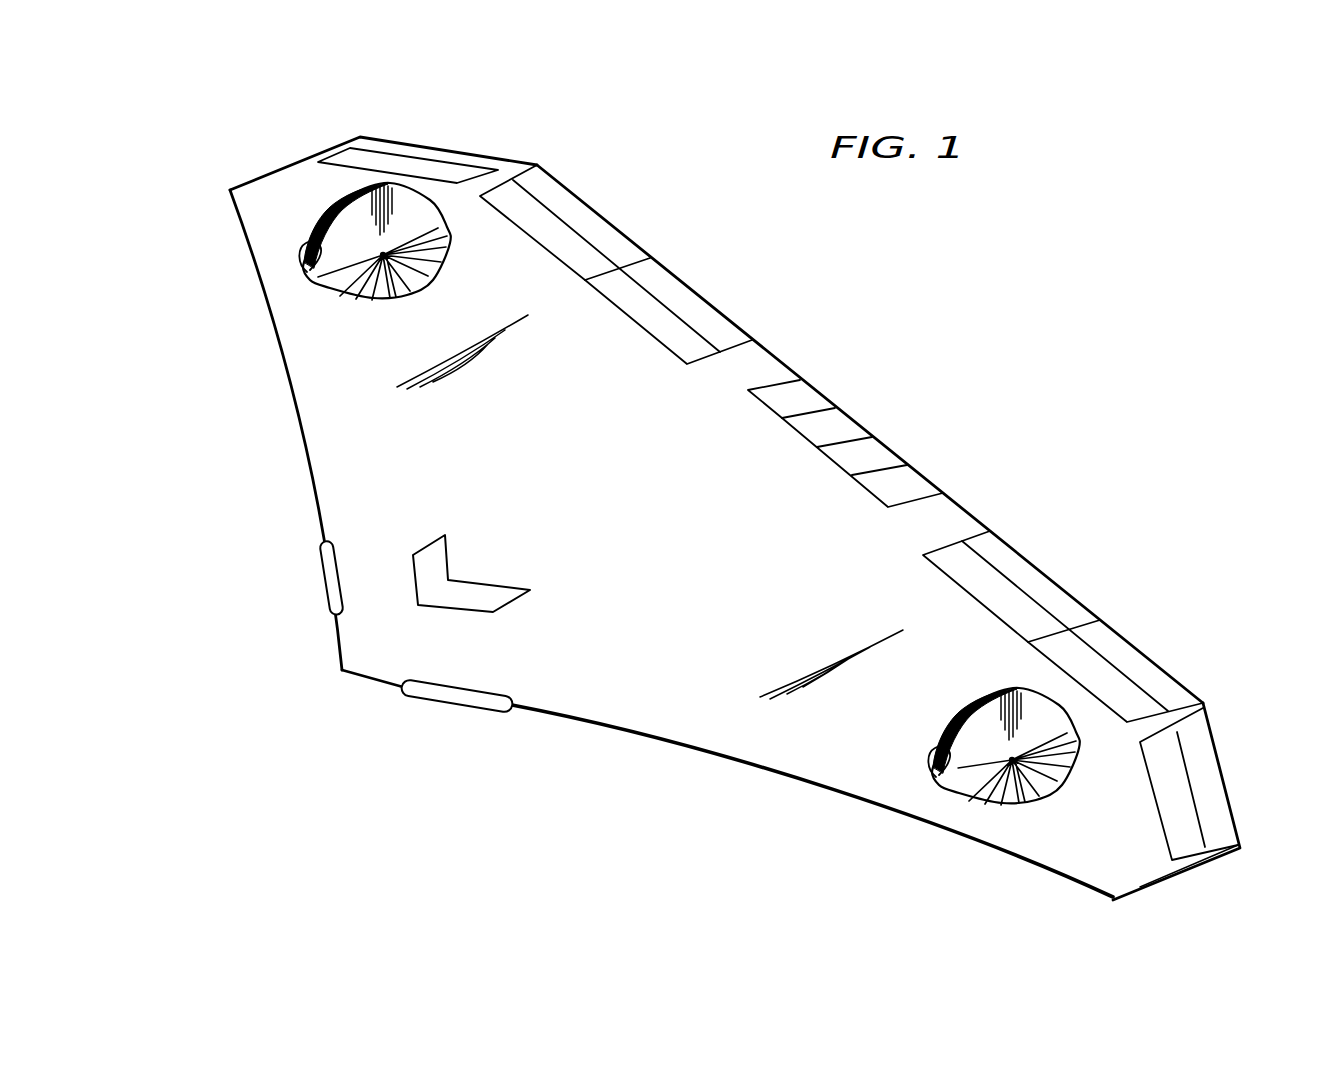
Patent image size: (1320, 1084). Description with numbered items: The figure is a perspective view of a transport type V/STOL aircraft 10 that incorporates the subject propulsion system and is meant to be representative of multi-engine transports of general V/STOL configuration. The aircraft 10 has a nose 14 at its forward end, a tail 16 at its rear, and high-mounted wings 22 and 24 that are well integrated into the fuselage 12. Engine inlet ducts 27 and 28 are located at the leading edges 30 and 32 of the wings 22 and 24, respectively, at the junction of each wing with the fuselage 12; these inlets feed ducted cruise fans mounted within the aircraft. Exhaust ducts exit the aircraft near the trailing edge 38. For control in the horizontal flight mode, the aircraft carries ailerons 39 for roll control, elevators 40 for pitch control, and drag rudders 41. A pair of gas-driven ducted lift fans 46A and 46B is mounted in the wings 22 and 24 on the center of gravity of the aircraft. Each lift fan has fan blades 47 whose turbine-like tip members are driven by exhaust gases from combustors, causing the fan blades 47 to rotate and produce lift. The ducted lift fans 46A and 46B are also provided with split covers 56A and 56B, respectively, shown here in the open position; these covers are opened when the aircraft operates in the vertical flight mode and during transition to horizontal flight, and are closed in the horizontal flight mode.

The aircraft 10 is at (230, 566).
The fuselage 12 is at (428, 531).
The nose 14 is at (340, 673).
The tail 16 is at (853, 428).
The wing 22 is at (280, 188).
The wing 24 is at (1102, 860).
The engine inlet duct 27 is at (328, 607).
The engine inlet duct 28 is at (467, 705).
The leading edge 30 is at (289, 383).
The leading edge 32 is at (713, 758).
The trailing edge 38 is at (788, 374).
The ailerons 39 is at (440, 160).
The elevators 40 is at (697, 310).
The drag rudders 41 is at (612, 236).
The ducted lift fan 46A is at (327, 262).
The ducted lift fan 46B is at (1012, 760).
The fan blades 47 is at (447, 233).
The split cover 56A is at (318, 277).
The split cover 56B is at (958, 768).